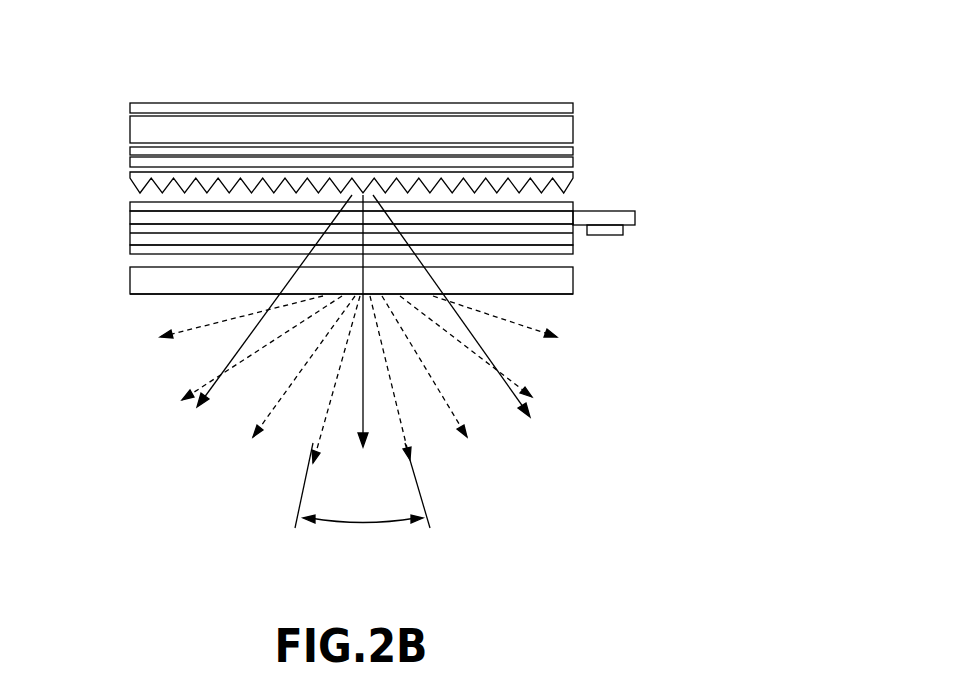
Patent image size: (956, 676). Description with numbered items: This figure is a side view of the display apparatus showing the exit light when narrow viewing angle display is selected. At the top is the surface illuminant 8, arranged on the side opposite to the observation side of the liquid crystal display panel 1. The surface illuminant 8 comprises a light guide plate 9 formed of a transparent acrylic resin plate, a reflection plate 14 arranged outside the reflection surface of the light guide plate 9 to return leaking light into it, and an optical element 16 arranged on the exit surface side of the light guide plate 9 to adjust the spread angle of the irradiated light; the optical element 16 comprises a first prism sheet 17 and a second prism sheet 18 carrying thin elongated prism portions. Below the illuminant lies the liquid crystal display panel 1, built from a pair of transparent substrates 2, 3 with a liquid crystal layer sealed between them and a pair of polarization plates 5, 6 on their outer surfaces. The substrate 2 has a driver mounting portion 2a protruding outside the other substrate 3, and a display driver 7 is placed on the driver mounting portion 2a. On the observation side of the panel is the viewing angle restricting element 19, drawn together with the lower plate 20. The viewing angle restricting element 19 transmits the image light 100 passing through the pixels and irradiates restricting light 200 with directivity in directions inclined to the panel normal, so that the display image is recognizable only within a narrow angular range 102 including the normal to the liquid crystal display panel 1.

The liquid crystal display panel 1 is at (361, 217).
The transparent substrate 2 is at (378, 190).
The driver mounting portion 2a is at (628, 211).
The transparent substrate 3 is at (148, 240).
The polarization plate 5 is at (573, 202).
The polarization plate 6 is at (573, 254).
The display driver 7 is at (615, 237).
The surface illuminant 8 is at (392, 101).
The light guide plate 9 is at (300, 125).
The reflection plate 14 is at (183, 103).
The optical element 16 is at (320, 123).
The first prism sheet 17 is at (528, 162).
The second prism sheet 18 is at (473, 182).
The viewing angle restricting element 19 is at (580, 303).
The bottom plate 20 is at (142, 278).
The image light 100 is at (200, 392).
The narrow angular range 102 is at (368, 523).
The restricting light 200 is at (188, 326).